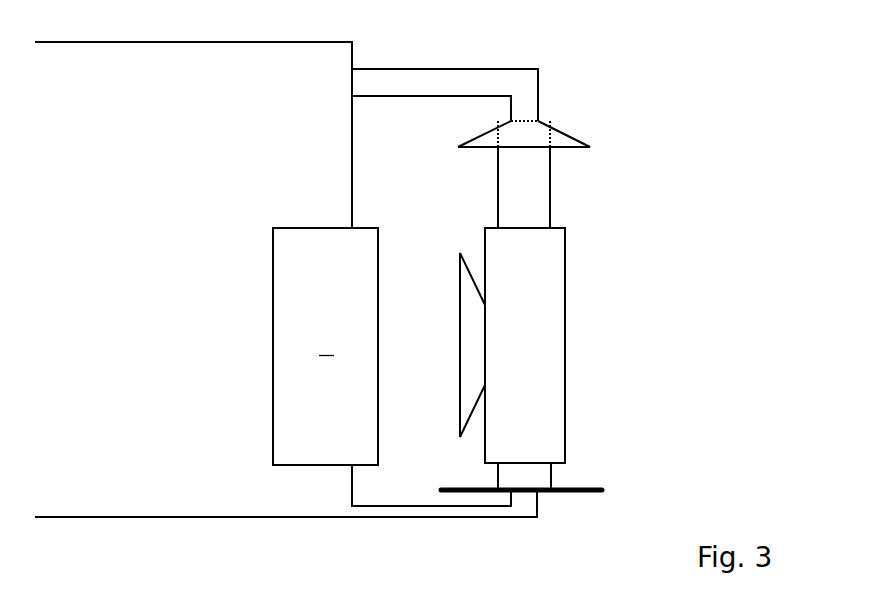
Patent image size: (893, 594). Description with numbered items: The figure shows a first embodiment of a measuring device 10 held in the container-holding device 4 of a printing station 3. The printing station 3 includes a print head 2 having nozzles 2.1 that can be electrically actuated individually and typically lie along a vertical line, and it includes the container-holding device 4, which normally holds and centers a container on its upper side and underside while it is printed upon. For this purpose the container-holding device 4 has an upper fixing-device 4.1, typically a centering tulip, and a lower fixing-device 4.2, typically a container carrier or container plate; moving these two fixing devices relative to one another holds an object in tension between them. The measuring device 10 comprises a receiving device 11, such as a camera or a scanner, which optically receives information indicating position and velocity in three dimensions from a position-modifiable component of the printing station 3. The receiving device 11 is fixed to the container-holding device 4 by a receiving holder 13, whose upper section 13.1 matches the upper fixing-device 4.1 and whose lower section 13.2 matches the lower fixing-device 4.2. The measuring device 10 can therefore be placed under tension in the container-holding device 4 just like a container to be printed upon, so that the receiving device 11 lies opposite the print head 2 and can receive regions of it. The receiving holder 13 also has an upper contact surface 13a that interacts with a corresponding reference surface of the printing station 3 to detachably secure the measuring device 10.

The print head 2 is at (325, 346).
The nozzles 2.1 is at (422, 334).
The printing station 3 is at (286, 115).
The container-holding device 4 is at (566, 292).
The upper fixing-device 4.1 is at (553, 121).
The lower fixing-device 4.2 is at (556, 468).
The measuring device 10 is at (579, 263).
The receiving device 11 is at (566, 345).
The receiving holder 13 is at (598, 262).
The upper contact surface 13a is at (586, 78).
The upper section 13.1 is at (570, 174).
The lower section 13.2 is at (598, 450).